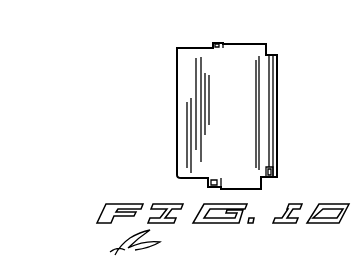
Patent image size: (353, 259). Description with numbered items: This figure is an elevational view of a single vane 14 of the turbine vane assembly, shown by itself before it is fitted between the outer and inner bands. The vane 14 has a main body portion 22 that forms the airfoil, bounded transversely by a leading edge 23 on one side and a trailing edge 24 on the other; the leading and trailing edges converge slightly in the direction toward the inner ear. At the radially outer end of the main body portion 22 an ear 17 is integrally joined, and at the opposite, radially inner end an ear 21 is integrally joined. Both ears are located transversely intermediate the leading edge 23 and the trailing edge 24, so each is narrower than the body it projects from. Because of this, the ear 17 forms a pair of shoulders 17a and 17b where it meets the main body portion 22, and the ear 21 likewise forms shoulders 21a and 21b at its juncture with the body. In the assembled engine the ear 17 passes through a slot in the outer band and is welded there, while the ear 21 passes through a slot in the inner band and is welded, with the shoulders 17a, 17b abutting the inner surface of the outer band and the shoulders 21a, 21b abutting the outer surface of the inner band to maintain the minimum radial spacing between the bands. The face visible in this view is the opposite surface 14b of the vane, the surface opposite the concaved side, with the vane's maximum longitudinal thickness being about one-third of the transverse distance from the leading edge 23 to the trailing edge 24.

The vane 14 is at (175, 111).
The opposite surface 14b is at (254, 126).
The ear portion 17 is at (235, 44).
The shoulder 17a is at (213, 44).
The shoulder 17b is at (268, 43).
The ear portion 21 is at (233, 188).
The shoulder 21a is at (208, 185).
The shoulder 21b is at (273, 169).
The main body portion 22 is at (242, 94).
The leading edge 23 is at (278, 72).
The trailing edge 24 is at (177, 72).